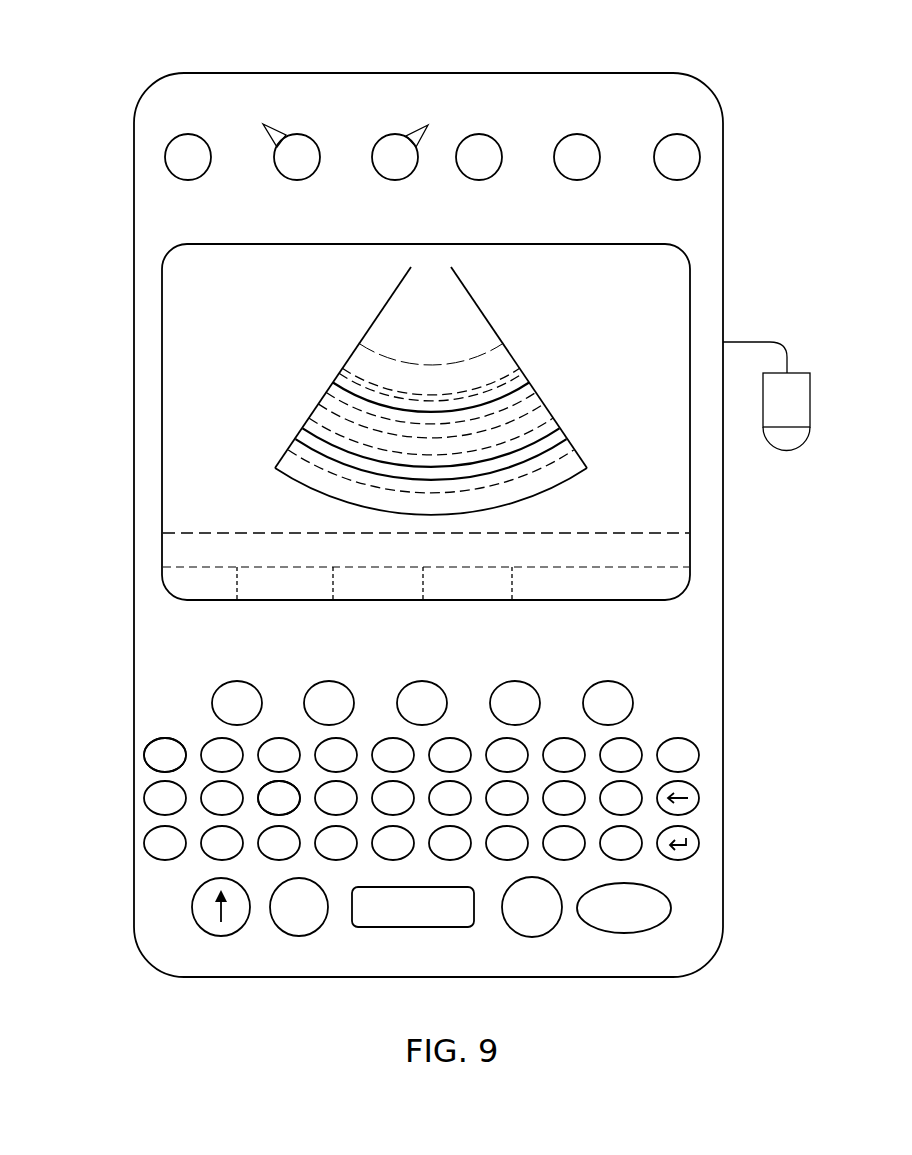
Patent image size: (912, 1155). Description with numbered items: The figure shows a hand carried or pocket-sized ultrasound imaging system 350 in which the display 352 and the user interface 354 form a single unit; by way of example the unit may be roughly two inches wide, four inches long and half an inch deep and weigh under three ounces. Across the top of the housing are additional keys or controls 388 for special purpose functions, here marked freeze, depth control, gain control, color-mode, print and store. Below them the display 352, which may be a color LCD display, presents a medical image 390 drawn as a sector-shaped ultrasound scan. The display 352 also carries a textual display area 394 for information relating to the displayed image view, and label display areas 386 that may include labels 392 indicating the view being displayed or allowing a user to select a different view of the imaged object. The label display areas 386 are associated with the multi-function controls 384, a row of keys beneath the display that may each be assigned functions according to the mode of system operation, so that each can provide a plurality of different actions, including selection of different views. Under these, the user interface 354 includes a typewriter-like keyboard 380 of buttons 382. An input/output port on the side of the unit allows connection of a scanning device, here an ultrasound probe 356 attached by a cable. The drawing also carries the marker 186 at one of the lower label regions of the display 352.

The pocket-sized ultrasound imaging system 350 is at (173, 50).
The display 352 is at (691, 288).
The user interface 354 is at (732, 527).
The ultrasound probe 356 is at (797, 368).
The keyboard 380 is at (120, 737).
The buttons 382 is at (186, 808).
The multi-function controls 384 is at (240, 681).
The label display areas 386 is at (191, 561).
The controls 388 is at (193, 134).
The medical image 390 is at (357, 346).
The labels 392 is at (210, 566).
The textual display area 394 is at (203, 526).
The tab region 186 is at (588, 560).